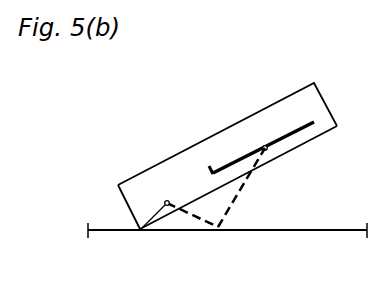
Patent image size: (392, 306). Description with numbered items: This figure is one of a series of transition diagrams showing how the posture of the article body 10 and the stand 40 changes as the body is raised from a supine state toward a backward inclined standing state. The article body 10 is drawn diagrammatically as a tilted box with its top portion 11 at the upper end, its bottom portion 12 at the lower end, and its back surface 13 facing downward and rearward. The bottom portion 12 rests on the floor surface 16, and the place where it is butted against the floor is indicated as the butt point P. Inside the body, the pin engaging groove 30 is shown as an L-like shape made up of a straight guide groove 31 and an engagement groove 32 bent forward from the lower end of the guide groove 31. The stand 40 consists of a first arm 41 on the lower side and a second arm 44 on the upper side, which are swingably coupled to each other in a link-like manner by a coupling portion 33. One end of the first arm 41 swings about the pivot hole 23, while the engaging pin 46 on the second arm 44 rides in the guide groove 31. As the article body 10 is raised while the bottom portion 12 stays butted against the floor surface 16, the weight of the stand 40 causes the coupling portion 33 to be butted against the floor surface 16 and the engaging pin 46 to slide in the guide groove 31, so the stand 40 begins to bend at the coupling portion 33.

The article body 10 is at (314, 83).
The top portion 11 is at (318, 107).
The bottom portion 12 is at (128, 205).
The back surface 13 is at (302, 145).
The floor surface 16 is at (107, 229).
The butt point P is at (140, 231).
The pivot hole 23 is at (148, 235).
The pin engaging groove 30 is at (203, 73).
The guide groove 31 is at (283, 138).
The engagement groove 32 is at (218, 166).
The coupling portion 33 is at (216, 232).
The stand 40 is at (237, 195).
The first arm 41 is at (187, 219).
The second arm 44 is at (234, 195).
The engaging pin 46 is at (268, 152).